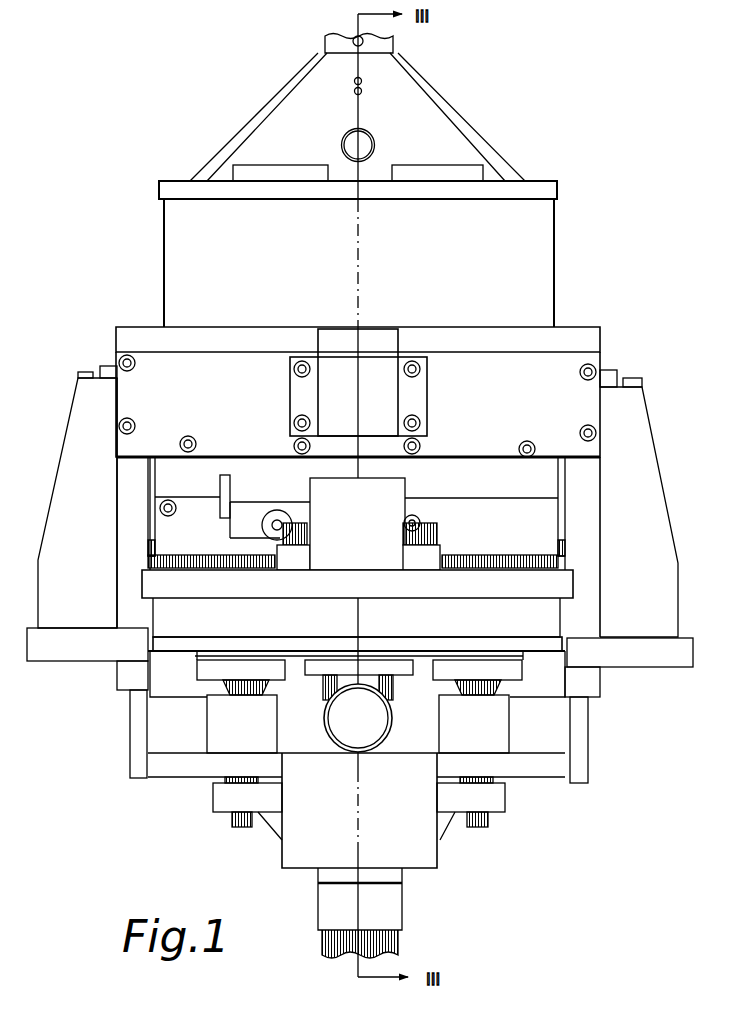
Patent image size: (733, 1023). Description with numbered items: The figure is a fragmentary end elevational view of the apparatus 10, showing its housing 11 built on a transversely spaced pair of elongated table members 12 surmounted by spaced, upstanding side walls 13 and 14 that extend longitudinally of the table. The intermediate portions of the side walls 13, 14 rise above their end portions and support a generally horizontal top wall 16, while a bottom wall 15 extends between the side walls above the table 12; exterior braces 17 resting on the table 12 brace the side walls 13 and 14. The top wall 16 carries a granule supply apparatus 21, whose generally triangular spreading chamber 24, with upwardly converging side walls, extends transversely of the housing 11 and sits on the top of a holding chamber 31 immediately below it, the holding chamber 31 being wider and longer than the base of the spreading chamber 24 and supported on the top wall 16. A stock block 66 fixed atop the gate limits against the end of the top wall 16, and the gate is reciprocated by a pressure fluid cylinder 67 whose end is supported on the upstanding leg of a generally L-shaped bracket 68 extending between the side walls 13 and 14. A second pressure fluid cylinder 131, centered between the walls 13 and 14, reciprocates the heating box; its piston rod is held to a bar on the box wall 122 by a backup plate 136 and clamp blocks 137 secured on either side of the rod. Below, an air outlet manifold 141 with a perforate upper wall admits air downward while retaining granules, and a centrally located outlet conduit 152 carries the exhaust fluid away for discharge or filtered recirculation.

The apparatus 10 is at (645, 917).
The housing 11 is at (609, 333).
The table members 12 is at (658, 656).
The side wall 13 is at (128, 477).
The side wall 14 is at (590, 493).
The bottom wall 15 is at (560, 588).
The top wall 16 is at (572, 338).
The exterior braces 17 is at (658, 510).
The granule supply apparatus 21 is at (590, 232).
The spreading chamber 24 is at (468, 107).
The holding chamber 31 is at (572, 268).
The stock block 66 is at (380, 337).
The pressure fluid cylinder 67 is at (334, 391).
The L-shaped bracket 68 is at (357, 406).
The box wall 122 is at (253, 467).
The pressure fluid cylinder 131 is at (393, 495).
The backup plate 136 is at (500, 525).
The clamp blocks 137 is at (298, 510).
The air outlet manifold 141 is at (170, 612).
The outlet conduit 152 is at (387, 685).